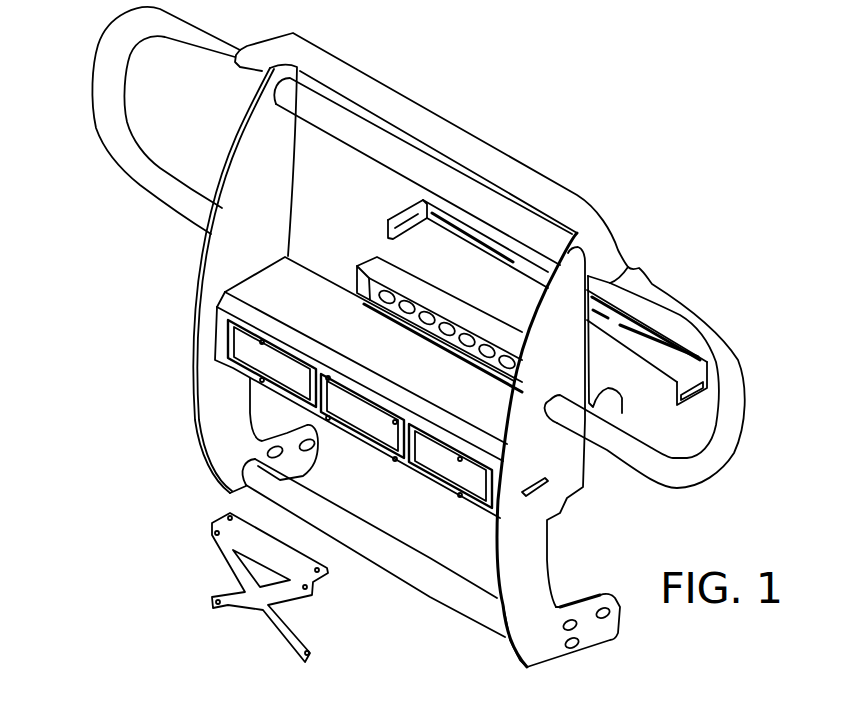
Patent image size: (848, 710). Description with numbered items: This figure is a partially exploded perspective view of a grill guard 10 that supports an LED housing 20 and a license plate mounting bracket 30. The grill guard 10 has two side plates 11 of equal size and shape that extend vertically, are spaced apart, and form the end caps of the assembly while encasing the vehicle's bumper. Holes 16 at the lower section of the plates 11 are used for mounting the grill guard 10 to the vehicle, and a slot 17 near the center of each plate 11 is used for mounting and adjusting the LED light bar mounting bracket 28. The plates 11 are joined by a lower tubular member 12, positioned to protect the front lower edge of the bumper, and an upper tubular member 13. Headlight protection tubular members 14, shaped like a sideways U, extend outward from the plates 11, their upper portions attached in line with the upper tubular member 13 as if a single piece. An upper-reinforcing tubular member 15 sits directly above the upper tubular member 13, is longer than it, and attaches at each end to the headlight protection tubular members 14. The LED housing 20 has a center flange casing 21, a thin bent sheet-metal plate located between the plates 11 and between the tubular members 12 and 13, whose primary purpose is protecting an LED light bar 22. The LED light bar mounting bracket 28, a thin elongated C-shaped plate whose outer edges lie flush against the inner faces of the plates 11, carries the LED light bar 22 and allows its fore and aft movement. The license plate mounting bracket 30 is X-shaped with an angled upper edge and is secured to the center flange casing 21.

The grill guard 10 is at (527, 110).
The side plates 11 is at (233, 252).
The lower tubular member 12 is at (458, 594).
The upper tubular member 13 is at (375, 143).
The headlight protection tubular members 14 is at (113, 97).
The upper-reinforcing tubular member 15 is at (375, 93).
The holes 16 is at (573, 650).
The slot 17 is at (540, 487).
The LED housing 20 is at (176, 417).
The center flange casing 21 is at (285, 303).
The LED light bar 22 is at (375, 263).
The LED light bar mounting bracket 28 is at (513, 263).
The license plate mounting bracket 30 is at (222, 594).